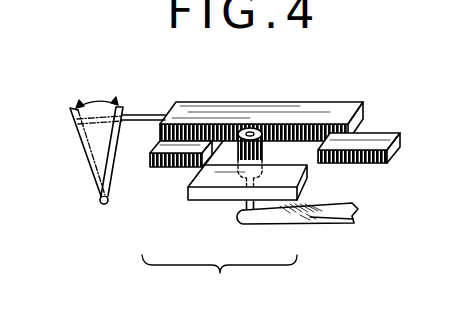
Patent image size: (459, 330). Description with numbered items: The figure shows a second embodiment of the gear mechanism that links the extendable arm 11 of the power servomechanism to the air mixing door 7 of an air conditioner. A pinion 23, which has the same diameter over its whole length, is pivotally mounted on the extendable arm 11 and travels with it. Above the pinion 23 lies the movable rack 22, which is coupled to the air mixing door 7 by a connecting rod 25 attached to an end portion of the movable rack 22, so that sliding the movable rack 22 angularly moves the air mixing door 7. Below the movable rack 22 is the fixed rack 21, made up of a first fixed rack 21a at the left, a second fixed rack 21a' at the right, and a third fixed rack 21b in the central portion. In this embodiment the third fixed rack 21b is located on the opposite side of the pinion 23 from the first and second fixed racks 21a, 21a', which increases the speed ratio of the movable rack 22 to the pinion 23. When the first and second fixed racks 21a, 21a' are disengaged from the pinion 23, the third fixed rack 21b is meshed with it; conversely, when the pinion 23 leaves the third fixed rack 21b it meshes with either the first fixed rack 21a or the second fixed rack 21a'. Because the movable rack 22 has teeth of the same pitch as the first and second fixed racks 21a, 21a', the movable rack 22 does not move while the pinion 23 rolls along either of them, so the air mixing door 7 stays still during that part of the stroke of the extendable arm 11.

The air mixing door 7 is at (110, 150).
The connecting rod 25 is at (143, 115).
The movable rack 22 is at (213, 103).
The pinion 23 is at (261, 128).
The fixed rack 21 is at (219, 281).
The first fixed rack 21a is at (180, 200).
The third fixed rack 21b is at (205, 200).
The second fixed rack 21a' is at (326, 196).
The extendable arm 11 is at (331, 216).